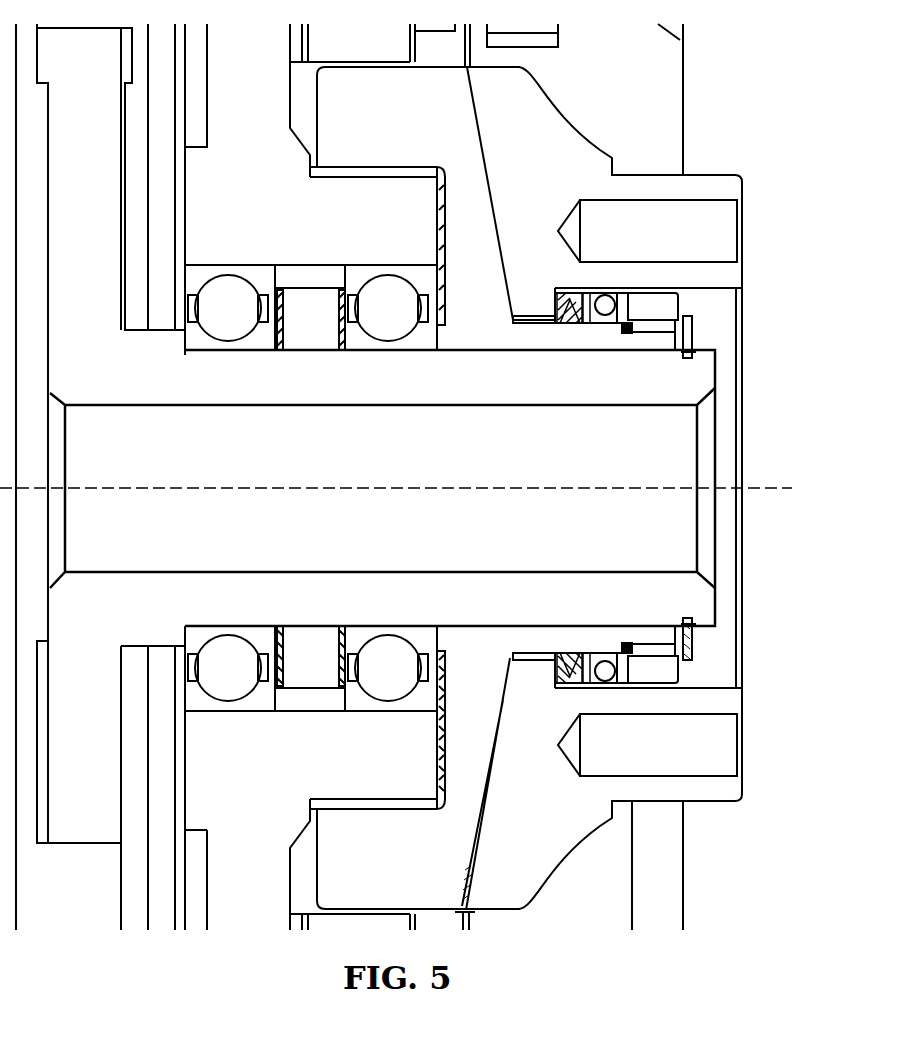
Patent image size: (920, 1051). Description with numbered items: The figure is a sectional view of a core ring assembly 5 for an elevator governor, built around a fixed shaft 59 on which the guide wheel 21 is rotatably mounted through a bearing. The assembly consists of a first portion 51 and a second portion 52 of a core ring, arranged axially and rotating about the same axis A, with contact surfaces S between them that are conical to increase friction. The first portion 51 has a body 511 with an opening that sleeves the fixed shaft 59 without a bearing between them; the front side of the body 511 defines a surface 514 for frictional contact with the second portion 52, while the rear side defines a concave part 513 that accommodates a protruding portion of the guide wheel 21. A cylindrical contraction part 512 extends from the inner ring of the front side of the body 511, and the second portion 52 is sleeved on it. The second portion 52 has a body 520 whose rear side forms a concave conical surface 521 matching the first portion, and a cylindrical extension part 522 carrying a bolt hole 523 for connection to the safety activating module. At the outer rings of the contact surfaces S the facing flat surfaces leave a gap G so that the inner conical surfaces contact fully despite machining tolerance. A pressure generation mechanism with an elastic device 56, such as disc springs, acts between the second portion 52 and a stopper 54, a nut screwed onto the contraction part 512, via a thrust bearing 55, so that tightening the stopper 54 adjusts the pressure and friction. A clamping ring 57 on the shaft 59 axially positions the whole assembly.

The core ring assembly 5 is at (578, 128).
The guide wheel 21 is at (329, 250).
The first portion of the core ring 51 is at (480, 657).
The body 511 is at (468, 712).
The cylindrical contraction part 512 is at (562, 647).
The concave part 513 is at (445, 733).
The surface 514 is at (487, 750).
The second portion of the core ring 52 is at (538, 843).
The body 520 is at (513, 812).
The concave conical surface 521 is at (495, 702).
The cylindrical extension part 522 is at (665, 785).
The bolt hole 523 is at (677, 755).
The stopper 54 is at (650, 308).
The thrust bearing 55 is at (592, 325).
The elastic device 56 is at (553, 318).
The clamping ring 57 is at (683, 330).
The fixed shaft 59 is at (95, 600).
The gap G is at (460, 90).
The contact surfaces S is at (490, 228).
The axis A is at (407, 492).